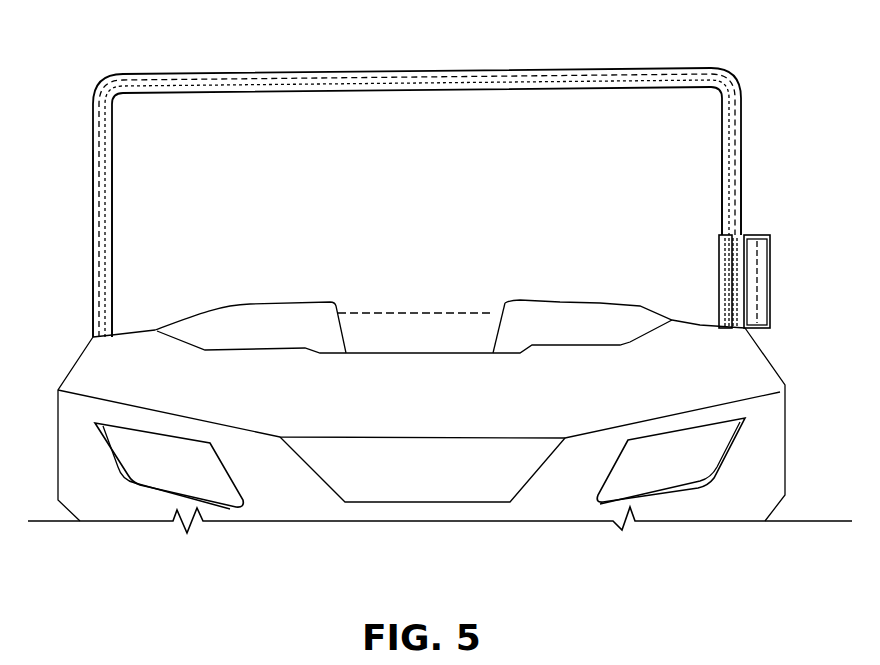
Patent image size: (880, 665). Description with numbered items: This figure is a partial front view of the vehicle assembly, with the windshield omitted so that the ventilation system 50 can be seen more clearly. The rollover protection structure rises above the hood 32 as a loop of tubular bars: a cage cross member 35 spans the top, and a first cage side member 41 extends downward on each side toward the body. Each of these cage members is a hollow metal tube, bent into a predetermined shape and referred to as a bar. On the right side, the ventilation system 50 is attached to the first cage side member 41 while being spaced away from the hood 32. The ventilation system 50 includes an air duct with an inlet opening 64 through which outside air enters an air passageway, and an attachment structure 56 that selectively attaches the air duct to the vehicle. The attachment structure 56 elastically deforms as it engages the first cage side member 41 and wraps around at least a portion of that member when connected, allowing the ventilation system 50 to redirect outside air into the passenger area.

The hood 32 is at (472, 426).
The cage cross member 35 is at (460, 72).
The first cage side member 41 is at (93, 151).
The ventilation system 50 is at (743, 271).
The attachment structure 56 is at (721, 272).
The inlet opening 64 is at (768, 305).